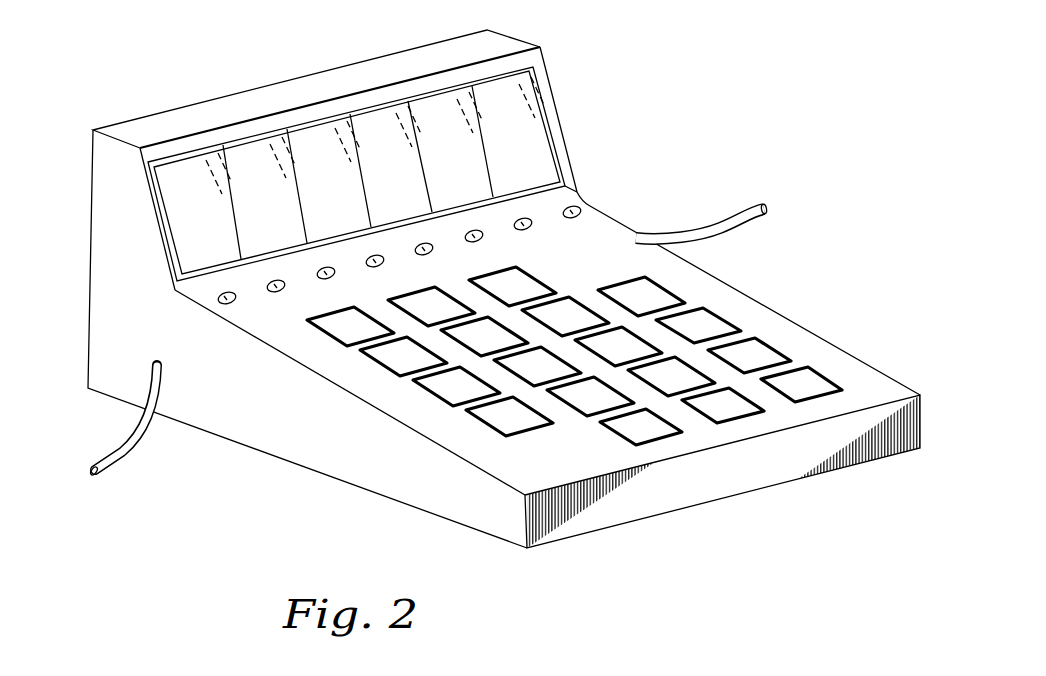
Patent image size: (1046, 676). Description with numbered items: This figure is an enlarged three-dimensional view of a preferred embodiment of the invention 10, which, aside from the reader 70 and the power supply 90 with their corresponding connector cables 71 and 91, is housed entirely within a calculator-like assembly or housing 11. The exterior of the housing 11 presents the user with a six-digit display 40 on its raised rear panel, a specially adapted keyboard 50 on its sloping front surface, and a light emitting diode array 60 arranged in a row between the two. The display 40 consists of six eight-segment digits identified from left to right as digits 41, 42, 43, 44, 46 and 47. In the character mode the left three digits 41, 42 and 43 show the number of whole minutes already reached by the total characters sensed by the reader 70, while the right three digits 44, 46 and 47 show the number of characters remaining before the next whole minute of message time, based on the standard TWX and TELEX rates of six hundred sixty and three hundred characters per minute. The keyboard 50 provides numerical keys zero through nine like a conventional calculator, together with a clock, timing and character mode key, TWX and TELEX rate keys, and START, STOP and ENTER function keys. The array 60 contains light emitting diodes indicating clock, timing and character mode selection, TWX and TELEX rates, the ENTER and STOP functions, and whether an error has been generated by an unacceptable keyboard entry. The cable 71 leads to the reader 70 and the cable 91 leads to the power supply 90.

The invention 10 is at (563, 81).
The housing 11 is at (721, 439).
The six-digit display 40 is at (335, 174).
The digit 41 is at (204, 230).
The digit 42 is at (271, 213).
The digit 43 is at (332, 199).
The digit 44 is at (396, 183).
The digit 46 is at (458, 166).
The digit 47 is at (516, 151).
The keyboard 50 is at (330, 364).
The light emitting diode array 60 is at (210, 297).
The reader 70 is at (798, 208).
The connector cable 71 is at (713, 236).
The power supply 90 is at (90, 477).
The connector cable 91 is at (138, 457).